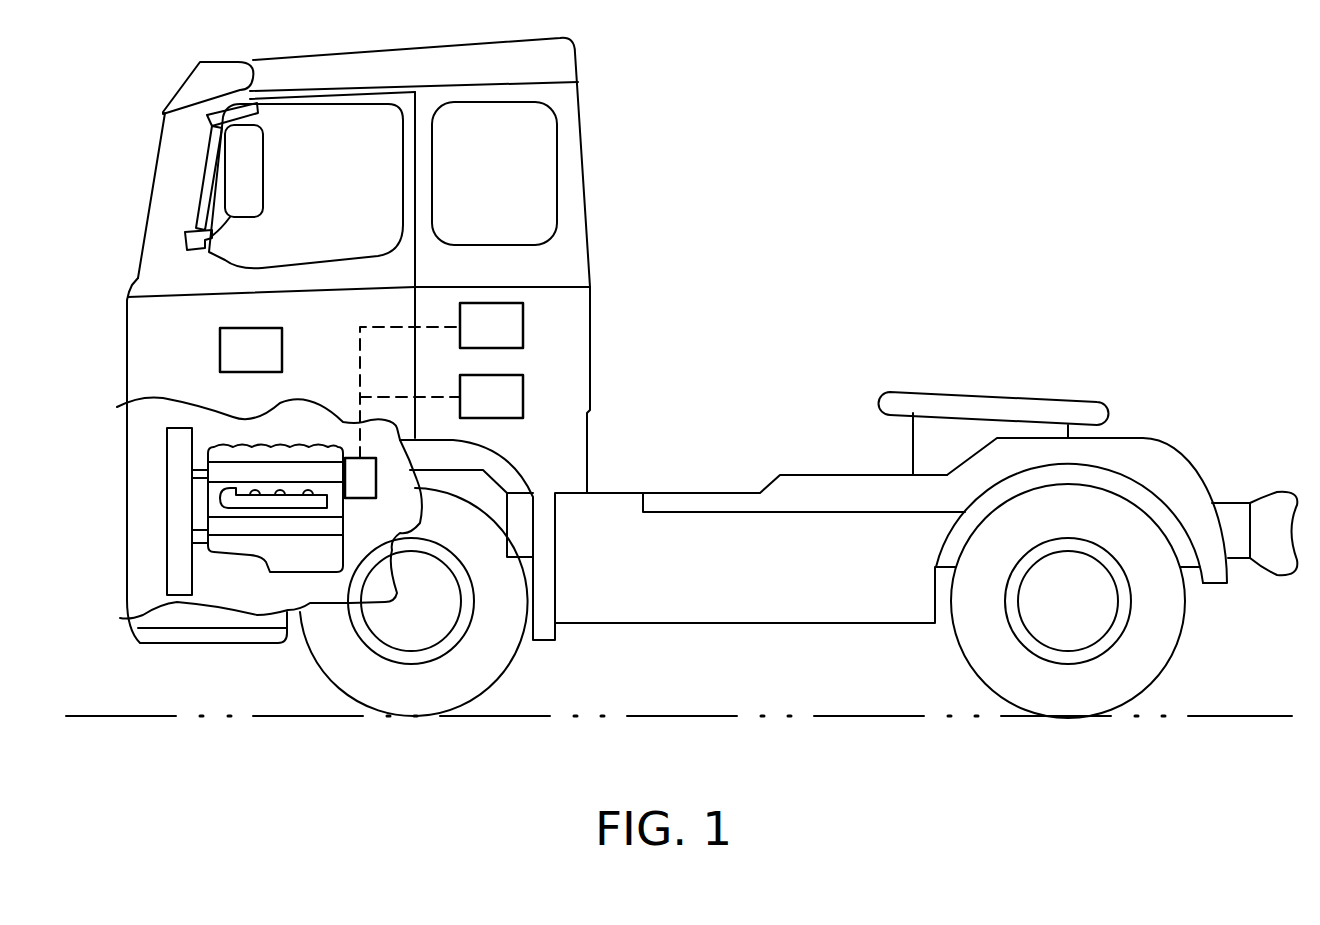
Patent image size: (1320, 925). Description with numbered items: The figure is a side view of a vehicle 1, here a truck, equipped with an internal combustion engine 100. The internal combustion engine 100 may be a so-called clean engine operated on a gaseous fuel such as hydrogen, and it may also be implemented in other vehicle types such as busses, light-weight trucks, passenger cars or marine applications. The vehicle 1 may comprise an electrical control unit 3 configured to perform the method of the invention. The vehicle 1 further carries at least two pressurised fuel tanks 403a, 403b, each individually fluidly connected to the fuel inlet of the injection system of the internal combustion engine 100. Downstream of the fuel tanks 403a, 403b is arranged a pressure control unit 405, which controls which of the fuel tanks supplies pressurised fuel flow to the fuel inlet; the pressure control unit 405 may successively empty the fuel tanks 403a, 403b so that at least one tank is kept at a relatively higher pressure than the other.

The vehicle 1 is at (750, 193).
The electrical control unit 3 is at (220, 351).
The internal combustion engine 100 is at (243, 567).
The pressurised fuel tank 403a is at (523, 328).
The pressurised fuel tank 403b is at (523, 398).
The pressure control unit 405 is at (353, 498).